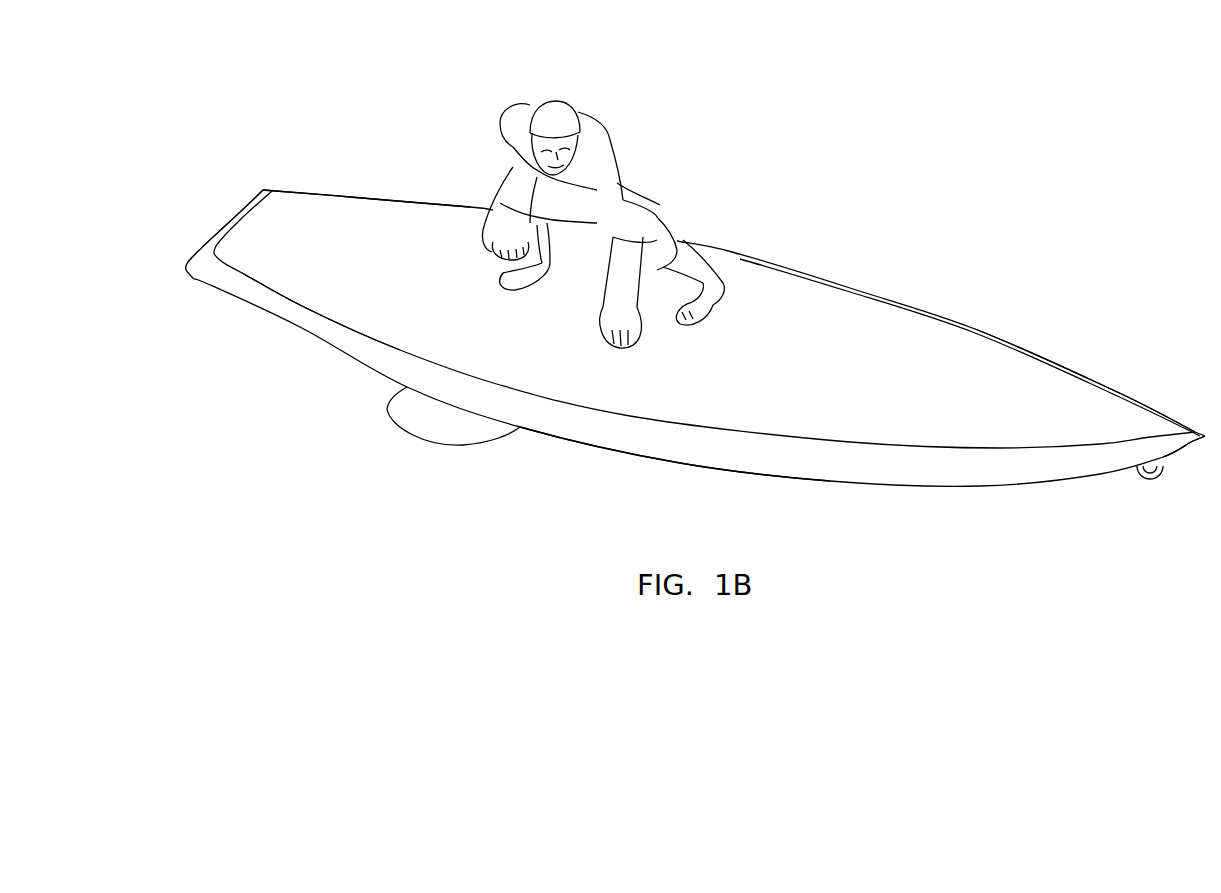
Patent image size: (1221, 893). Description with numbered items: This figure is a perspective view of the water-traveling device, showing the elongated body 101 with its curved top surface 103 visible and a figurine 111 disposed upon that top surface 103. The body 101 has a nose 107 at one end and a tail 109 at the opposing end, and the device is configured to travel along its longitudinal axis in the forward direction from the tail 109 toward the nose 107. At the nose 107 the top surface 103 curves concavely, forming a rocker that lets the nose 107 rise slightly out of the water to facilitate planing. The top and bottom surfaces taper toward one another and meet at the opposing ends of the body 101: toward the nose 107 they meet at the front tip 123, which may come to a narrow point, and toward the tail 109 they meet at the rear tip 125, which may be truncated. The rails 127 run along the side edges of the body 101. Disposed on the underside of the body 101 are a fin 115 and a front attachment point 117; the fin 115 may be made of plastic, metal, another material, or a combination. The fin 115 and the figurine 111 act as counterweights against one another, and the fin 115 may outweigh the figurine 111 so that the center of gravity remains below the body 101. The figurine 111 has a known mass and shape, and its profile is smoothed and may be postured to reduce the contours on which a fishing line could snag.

The body 101 is at (817, 387).
The top surface 103 is at (410, 227).
The nose 107 is at (1103, 410).
The tail 109 is at (287, 262).
The figurine 111 is at (517, 130).
The fin 115 is at (420, 417).
The front attachment point 117 is at (1137, 472).
The front tip 123 is at (1190, 427).
The rear tip 125 is at (235, 222).
The rails 127 is at (680, 440).